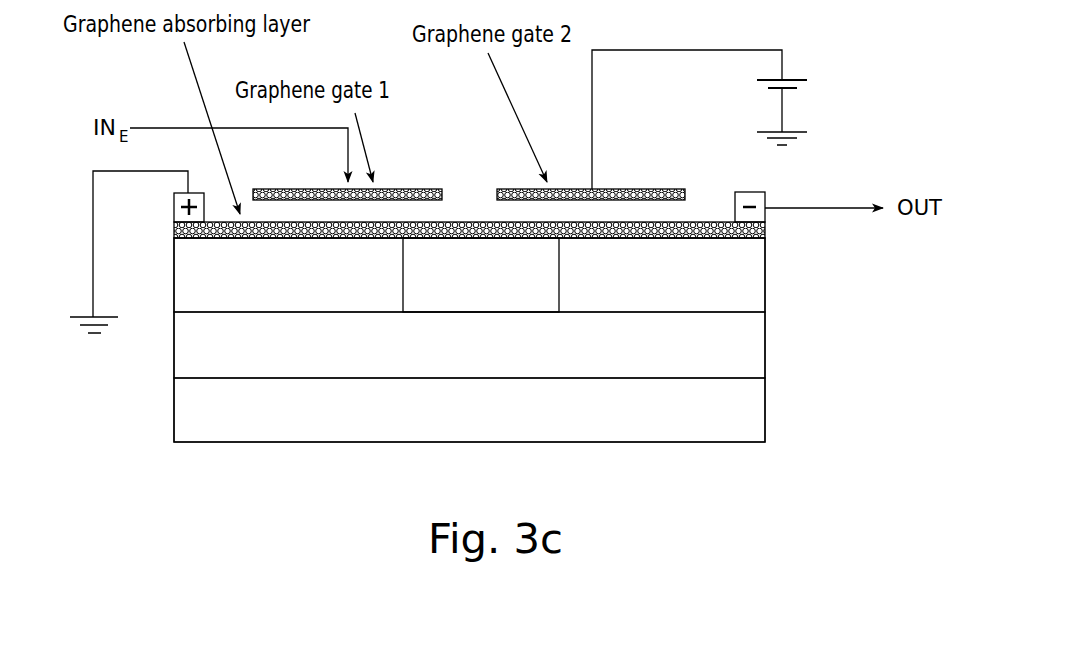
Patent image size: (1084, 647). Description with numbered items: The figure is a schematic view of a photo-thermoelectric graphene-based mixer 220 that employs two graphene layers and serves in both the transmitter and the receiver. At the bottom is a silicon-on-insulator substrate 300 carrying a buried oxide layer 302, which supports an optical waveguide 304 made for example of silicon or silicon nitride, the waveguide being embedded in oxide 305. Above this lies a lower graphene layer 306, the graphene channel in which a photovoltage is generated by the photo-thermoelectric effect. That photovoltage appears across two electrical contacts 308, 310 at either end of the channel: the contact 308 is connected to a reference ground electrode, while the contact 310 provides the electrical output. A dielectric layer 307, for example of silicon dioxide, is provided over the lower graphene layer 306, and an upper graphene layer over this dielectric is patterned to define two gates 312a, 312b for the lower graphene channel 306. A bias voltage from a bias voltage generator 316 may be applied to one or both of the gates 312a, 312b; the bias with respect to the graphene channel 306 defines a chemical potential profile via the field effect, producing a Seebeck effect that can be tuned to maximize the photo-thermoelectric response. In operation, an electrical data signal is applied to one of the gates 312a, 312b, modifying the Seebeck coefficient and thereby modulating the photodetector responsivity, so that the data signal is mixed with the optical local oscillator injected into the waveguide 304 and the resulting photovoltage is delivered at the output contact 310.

The graphene-based mixer 220 is at (816, 449).
The silicon substrate 300 is at (742, 408).
The buried oxide layer 302 is at (740, 355).
The optical waveguide 304 is at (548, 273).
The oxide 305 is at (750, 262).
The lower graphene layer 306 is at (765, 232).
The dielectric layer 307 is at (488, 215).
The positive electrical contact 308 is at (191, 193).
The negative electrical contact 310 is at (760, 197).
The gate 312a is at (415, 189).
The gate 312b is at (628, 189).
The bias voltage generator 316 is at (836, 108).